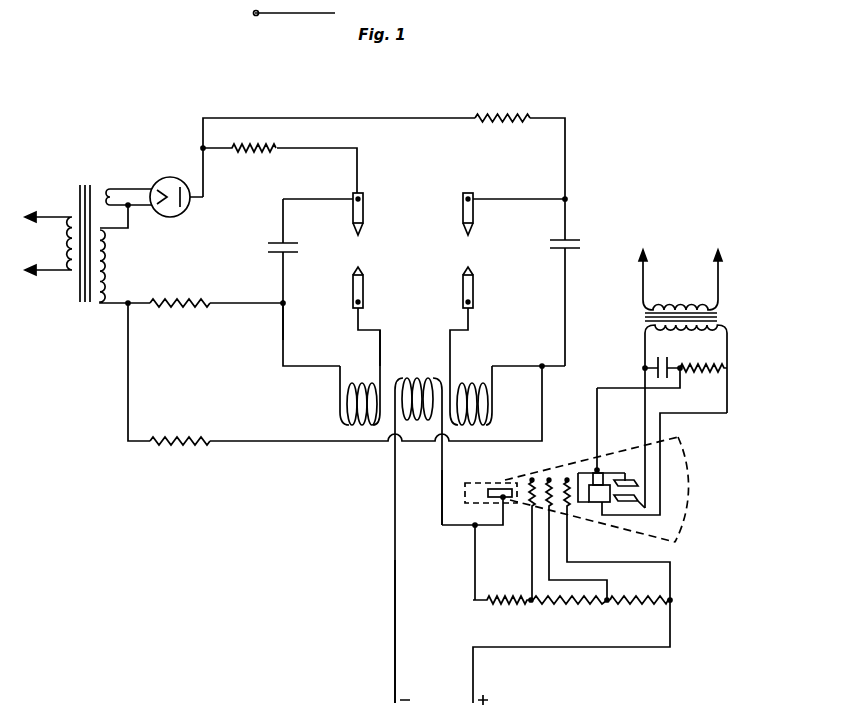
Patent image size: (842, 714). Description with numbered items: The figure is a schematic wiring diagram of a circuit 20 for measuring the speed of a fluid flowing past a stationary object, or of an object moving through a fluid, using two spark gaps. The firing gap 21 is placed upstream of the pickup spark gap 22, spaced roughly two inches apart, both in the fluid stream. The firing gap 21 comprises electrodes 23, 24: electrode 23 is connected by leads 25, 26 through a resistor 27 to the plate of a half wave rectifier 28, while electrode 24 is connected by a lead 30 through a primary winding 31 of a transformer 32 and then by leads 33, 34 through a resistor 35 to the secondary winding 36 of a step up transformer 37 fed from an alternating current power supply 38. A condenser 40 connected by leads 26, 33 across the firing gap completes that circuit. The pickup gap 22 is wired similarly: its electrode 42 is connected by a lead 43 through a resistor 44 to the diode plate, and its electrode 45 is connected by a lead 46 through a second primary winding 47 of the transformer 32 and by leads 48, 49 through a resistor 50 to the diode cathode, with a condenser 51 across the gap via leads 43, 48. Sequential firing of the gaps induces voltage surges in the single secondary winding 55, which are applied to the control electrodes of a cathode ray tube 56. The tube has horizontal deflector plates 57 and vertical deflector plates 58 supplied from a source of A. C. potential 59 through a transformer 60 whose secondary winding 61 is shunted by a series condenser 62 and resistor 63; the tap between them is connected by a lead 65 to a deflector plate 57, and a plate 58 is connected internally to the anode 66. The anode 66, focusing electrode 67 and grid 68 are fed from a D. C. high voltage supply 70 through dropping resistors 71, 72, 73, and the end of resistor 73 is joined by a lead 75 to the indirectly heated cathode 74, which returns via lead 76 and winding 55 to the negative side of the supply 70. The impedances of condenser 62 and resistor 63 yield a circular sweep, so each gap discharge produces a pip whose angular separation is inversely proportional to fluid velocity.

The circuit 20 is at (622, 118).
The firing gap 21 is at (464, 261).
The pickup spark gap 22 is at (354, 261).
The electrode 23 is at (464, 226).
The electrode 24 is at (473, 289).
The lead 25 is at (507, 195).
The lead 26 is at (282, 117).
The resistor 27 is at (502, 117).
The half wave rectifier 28 is at (168, 177).
The lead 30 is at (450, 351).
The primary winding 31 is at (470, 428).
The transformer 32 is at (426, 374).
The lead 33 is at (512, 363).
The lead 34 is at (128, 387).
The resistor 35 is at (180, 443).
The secondary winding 36 is at (108, 270).
The step up transformer 37 is at (91, 179).
The alternating current power supply 38 is at (43, 254).
The condenser 40 is at (550, 248).
The electrode 42 is at (360, 234).
The lead 43 is at (320, 148).
The resistor 44 is at (250, 150).
The electrode 45 is at (363, 289).
The lead 46 is at (380, 349).
The second primary winding 47 is at (363, 425).
The lead 48 is at (283, 332).
The lead 49 is at (218, 303).
The resistor 50 is at (192, 300).
The condenser 51 is at (265, 248).
The secondary winding 55 is at (417, 420).
The cathode ray tube 56 is at (690, 482).
The horizontal deflector plates 57 is at (598, 503).
The vertical deflector plates 58 is at (625, 502).
The source of A. C. potential 59 is at (688, 269).
The transformer 60 is at (754, 321).
The secondary winding 61 is at (680, 340).
The condenser 62 is at (668, 363).
The resistor 63 is at (707, 372).
The lead 65 is at (617, 390).
The anode 66 is at (567, 482).
The focusing electrode 67 is at (549, 482).
The grid 68 is at (532, 482).
The D. C. high voltage supply 70 is at (449, 706).
The dropping resistor 71 is at (627, 600).
The dropping resistor 72 is at (562, 600).
The dropping resistor 73 is at (500, 600).
The indirectly heated cathode 74 is at (492, 488).
The lead 75 is at (473, 569).
The lead 76 is at (442, 483).